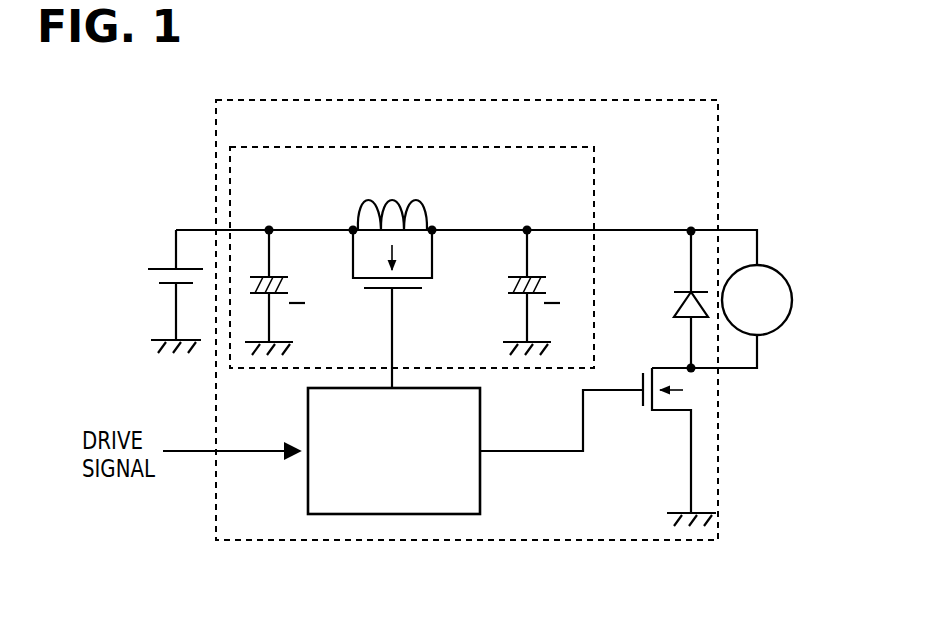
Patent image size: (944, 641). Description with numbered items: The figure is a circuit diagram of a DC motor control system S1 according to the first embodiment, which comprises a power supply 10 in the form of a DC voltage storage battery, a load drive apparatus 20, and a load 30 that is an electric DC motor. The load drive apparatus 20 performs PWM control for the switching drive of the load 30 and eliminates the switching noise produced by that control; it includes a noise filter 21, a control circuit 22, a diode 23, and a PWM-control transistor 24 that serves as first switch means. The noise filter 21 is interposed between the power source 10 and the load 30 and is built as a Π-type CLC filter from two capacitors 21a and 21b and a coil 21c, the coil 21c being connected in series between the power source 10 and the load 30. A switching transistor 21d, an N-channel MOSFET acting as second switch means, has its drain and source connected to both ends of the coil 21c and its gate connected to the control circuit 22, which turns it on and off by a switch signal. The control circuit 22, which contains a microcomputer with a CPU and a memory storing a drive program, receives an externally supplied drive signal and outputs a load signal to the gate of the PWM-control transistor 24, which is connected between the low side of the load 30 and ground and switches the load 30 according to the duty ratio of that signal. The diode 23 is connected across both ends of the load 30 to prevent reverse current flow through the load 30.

The DC motor control system S1 is at (760, 108).
The power supply 10 is at (163, 268).
The load drive apparatus 20 is at (592, 100).
The noise filter 21 is at (258, 372).
The capacitor 21a is at (257, 277).
The capacitor 21b is at (535, 277).
The coil 21c is at (426, 211).
The switching transistor 21d is at (432, 258).
The control circuit 22 is at (378, 514).
The diode 23 is at (674, 300).
The transistor 24 is at (660, 410).
The load 30 is at (776, 268).